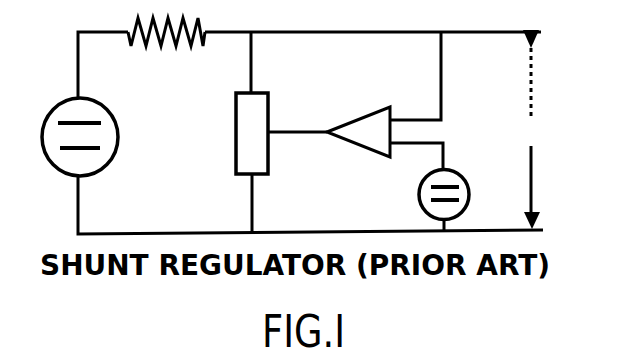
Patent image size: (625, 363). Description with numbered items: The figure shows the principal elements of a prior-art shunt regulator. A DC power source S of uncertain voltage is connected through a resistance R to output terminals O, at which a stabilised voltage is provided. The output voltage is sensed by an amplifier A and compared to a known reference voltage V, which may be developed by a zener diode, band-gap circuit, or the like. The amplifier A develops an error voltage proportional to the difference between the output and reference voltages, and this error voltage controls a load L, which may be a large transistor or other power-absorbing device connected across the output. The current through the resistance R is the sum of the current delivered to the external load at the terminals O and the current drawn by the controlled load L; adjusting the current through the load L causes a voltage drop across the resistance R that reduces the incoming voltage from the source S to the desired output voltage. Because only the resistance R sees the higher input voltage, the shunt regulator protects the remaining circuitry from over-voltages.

The DC power source S is at (80, 123).
The resistance R is at (166, 48).
The load L is at (240, 133).
The amplifier A is at (358, 122).
The reference voltage V is at (455, 195).
The output terminals O is at (532, 129).